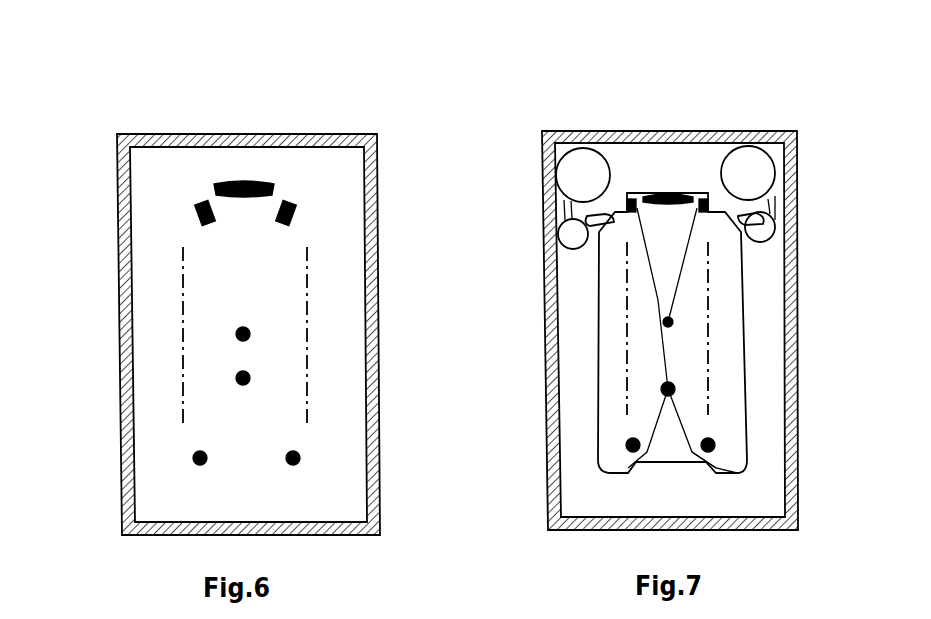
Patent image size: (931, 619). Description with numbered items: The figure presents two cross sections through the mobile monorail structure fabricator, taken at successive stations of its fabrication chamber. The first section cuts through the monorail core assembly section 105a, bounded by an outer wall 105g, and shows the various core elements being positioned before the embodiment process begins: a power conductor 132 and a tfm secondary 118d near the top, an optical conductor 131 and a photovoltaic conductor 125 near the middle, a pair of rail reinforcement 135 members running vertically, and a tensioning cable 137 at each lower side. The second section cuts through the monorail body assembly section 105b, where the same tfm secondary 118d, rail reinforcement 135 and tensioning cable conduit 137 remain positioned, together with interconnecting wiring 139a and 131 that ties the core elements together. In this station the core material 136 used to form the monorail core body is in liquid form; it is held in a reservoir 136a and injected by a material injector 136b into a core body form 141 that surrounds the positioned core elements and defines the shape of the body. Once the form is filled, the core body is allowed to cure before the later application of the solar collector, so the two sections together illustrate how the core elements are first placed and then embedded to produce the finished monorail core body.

In FIG. 6, the monorail core assembly section 105a is at (135, 92).
In FIG. 7, the monorail body assembly section 105b is at (577, 43).
In FIG. 6, the outer wall 105g is at (355, 535).
In FIG. 7, the outer wall 105g is at (548, 506).
In FIG. 6, the tfm secondary 118d is at (244, 183).
In FIG. 7, the tfm secondary 118d is at (668, 190).
In FIG. 6, the power conductor 132 is at (200, 200).
In FIG. 6, the rail reinforcement 135 is at (183, 257).
In FIG. 7, the rail reinforcement 135 is at (708, 400).
In FIG. 6, the optical conductor 131 is at (243, 334).
In FIG. 7, the optical conductor 131 is at (687, 262).
In FIG. 6, the photovoltaic conductor 125 is at (243, 378).
In FIG. 6, the tensioning cable 137 is at (200, 458).
In FIG. 7, the tensioning cable 137 is at (717, 453).
In FIG. 7, the core material 136 is at (577, 167).
In FIG. 7, the reservoir 136a is at (560, 193).
In FIG. 7, the material injector 136b is at (612, 203).
In FIG. 7, the interconnecting wiring 139a is at (660, 350).
In FIG. 7, the core body form 141 is at (597, 392).